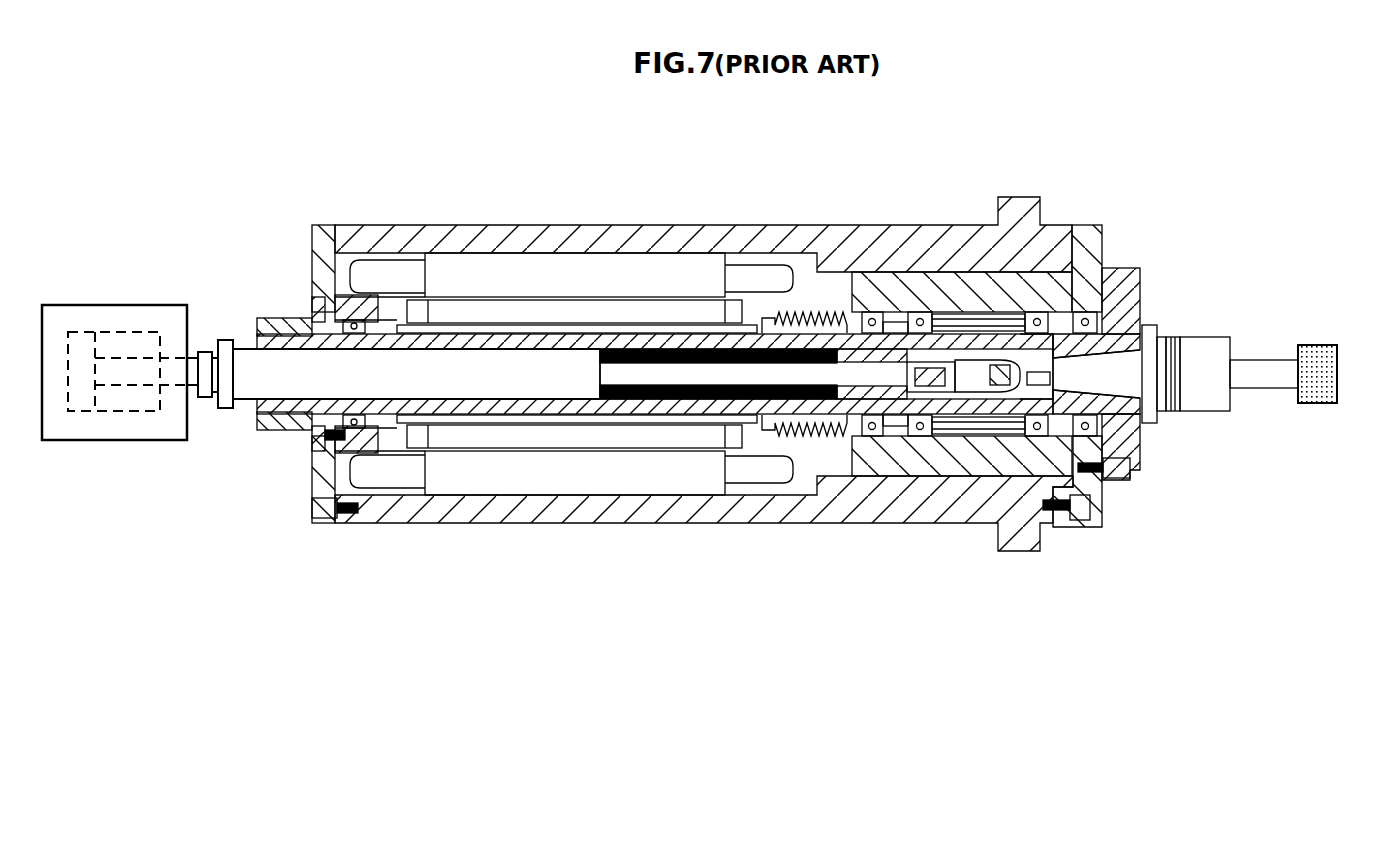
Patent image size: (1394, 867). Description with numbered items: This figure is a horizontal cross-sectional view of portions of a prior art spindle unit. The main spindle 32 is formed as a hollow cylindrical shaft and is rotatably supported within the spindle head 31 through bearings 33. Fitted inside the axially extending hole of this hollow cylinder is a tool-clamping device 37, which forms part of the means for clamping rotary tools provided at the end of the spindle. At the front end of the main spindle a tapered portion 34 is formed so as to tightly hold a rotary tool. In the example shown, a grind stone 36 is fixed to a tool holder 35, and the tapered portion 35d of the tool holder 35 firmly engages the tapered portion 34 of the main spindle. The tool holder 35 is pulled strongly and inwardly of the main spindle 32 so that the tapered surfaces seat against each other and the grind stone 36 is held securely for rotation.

The spindle head 31 is at (913, 235).
The main spindle 32 is at (670, 340).
The bearings 33 is at (1037, 314).
The tapered portion 34 is at (1108, 355).
The tapered shank of wheel arbor 35d is at (1127, 377).
The tool holder 35 is at (1222, 352).
The grind stone 36 is at (1317, 362).
The tool-clamping device 37 is at (935, 397).